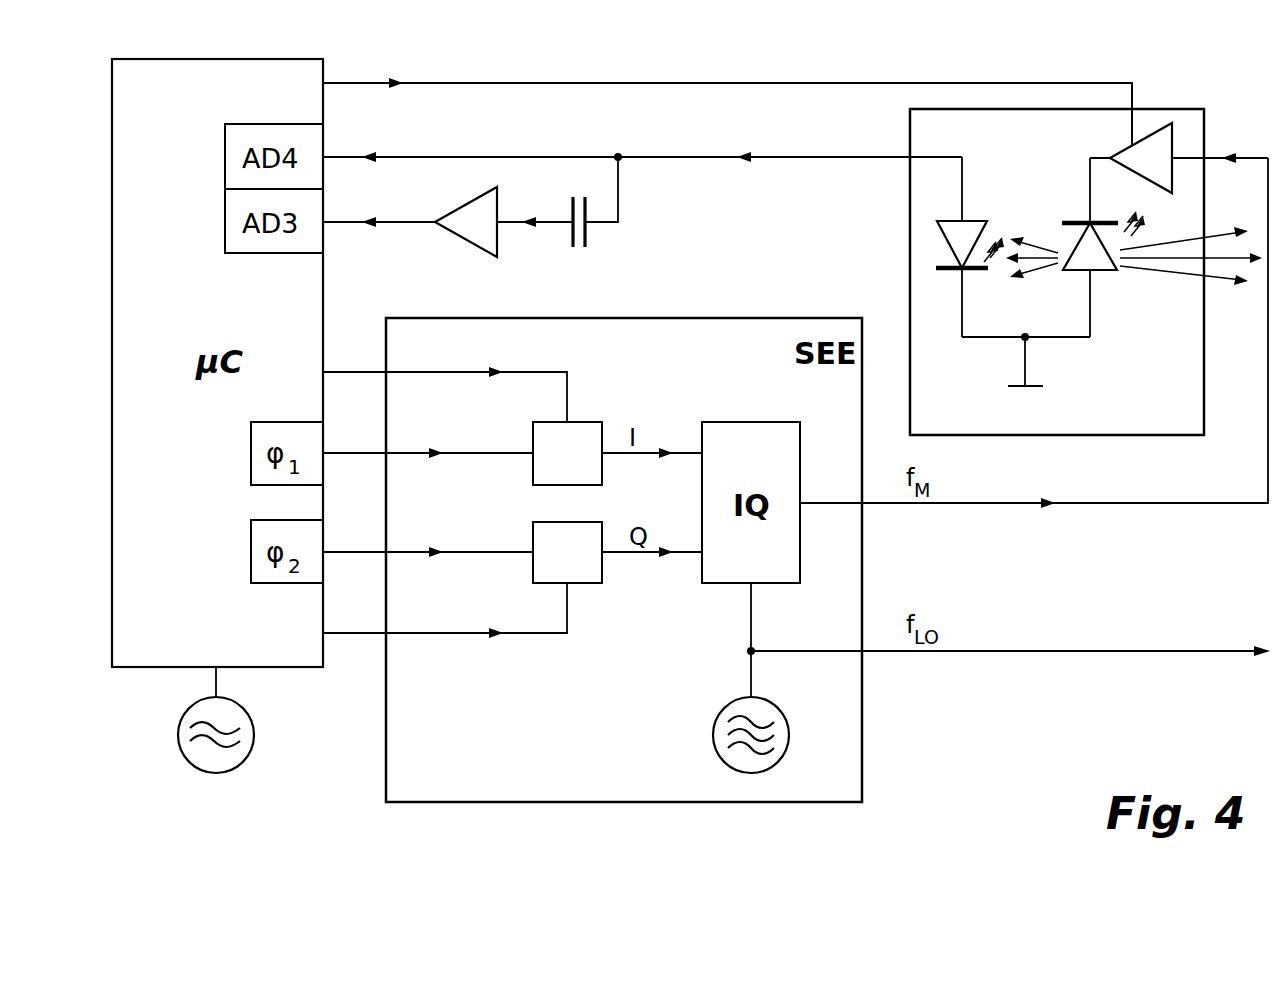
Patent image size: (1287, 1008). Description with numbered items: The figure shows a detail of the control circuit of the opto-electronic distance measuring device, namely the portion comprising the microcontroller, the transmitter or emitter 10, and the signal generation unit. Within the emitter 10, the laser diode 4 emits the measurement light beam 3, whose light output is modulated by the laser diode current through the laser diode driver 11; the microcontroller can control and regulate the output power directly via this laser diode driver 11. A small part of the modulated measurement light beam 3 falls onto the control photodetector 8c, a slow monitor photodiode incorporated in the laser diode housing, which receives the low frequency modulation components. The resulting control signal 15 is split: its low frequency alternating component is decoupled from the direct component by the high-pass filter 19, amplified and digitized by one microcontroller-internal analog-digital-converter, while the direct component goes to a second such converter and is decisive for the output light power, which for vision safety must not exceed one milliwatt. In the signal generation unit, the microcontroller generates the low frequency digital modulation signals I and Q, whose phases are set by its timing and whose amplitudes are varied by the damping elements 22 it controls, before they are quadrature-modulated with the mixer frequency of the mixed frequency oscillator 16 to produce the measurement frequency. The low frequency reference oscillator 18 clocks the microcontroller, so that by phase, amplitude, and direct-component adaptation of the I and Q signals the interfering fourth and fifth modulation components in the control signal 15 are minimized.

The measurement light beam 3 is at (1030, 242).
The laser diode 4 is at (1100, 272).
The control photodetector 8c is at (965, 224).
The emitter 10 is at (1057, 272).
The laser diode driver 11 is at (1116, 152).
The control signal 15 is at (805, 158).
The mixed frequency oscillator 16 is at (714, 760).
The low frequency reference oscillator 18 is at (184, 751).
The high-pass filter 19 is at (604, 236).
The damping elements 22 is at (586, 428).